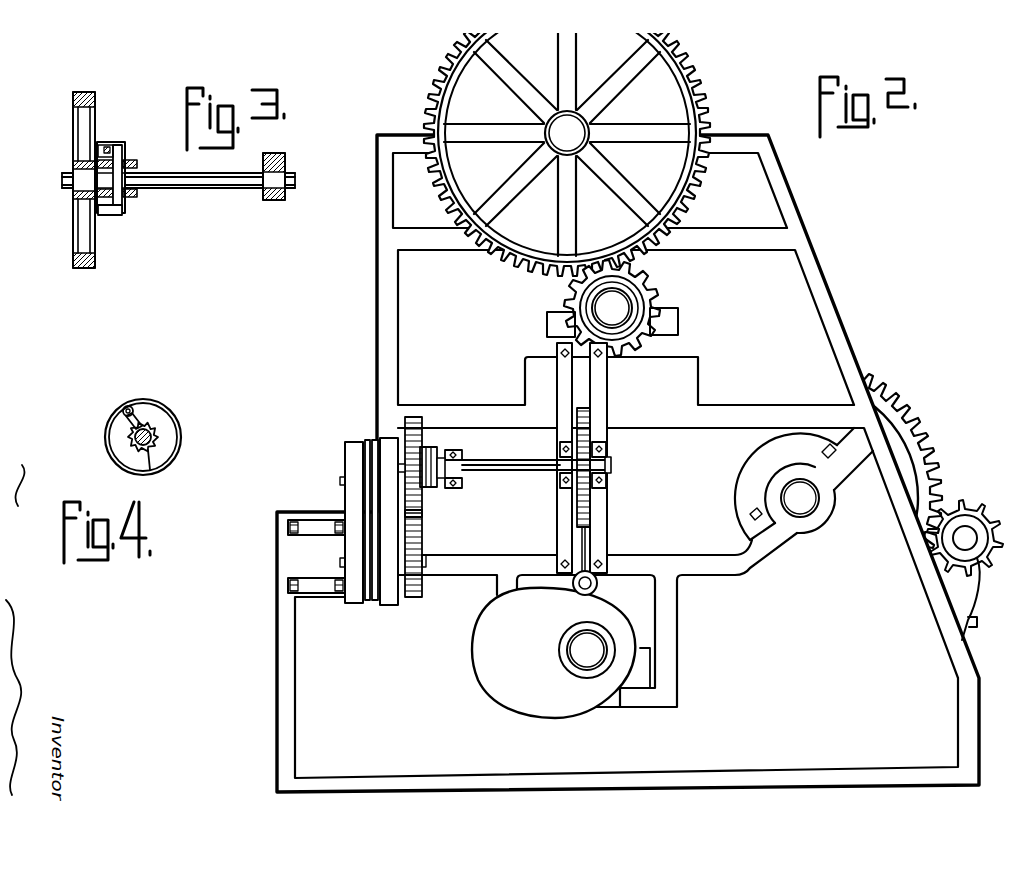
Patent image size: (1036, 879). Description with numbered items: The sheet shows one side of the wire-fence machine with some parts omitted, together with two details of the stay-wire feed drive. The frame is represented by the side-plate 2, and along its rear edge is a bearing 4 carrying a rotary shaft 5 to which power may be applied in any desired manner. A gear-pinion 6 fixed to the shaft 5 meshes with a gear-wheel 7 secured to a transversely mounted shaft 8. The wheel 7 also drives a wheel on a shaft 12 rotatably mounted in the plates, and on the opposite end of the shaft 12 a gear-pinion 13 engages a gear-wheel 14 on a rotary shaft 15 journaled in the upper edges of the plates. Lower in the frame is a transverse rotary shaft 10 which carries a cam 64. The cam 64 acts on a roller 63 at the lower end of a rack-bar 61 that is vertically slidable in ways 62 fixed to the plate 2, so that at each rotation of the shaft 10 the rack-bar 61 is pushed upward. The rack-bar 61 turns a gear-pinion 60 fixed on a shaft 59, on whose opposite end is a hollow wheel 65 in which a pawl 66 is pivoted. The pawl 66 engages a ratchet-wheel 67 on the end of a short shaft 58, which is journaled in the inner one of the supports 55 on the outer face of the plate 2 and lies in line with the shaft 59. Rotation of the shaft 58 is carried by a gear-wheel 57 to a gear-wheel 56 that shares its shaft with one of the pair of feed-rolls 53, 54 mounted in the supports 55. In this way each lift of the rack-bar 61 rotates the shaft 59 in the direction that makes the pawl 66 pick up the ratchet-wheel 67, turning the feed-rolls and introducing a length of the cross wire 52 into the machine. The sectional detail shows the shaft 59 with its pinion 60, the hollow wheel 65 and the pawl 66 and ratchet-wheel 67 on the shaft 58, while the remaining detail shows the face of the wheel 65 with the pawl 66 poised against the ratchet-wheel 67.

In FIG. 2, the side-plate 2 is at (818, 273).
In FIG. 2, the bearing 4 is at (960, 583).
In FIG. 2, the rotary shaft 5 is at (965, 538).
In FIG. 2, the gear-pinion 6 is at (965, 508).
In FIG. 2, the gear-wheel 7 is at (897, 406).
In FIG. 2, the shaft 8 is at (808, 505).
In FIG. 2, the transverse rotary shaft 10 is at (600, 645).
In FIG. 2, the shaft 12 is at (648, 283).
In FIG. 2, the gear-pinion 13 is at (630, 302).
In FIG. 2, the gear-wheel 14 is at (706, 88).
In FIG. 2, the rotary shaft 15 is at (575, 115).
In FIG. 2, the cross wire 52 is at (368, 522).
In FIG. 2, the feed-roll 53 is at (370, 603).
In FIG. 2, the feed-roll 54 is at (363, 442).
In FIG. 2, the support 55 is at (392, 543).
In FIG. 2, the gear-wheel 56 is at (420, 600).
In FIG. 2, the gear-wheel 57 is at (413, 418).
In FIG. 3, the gear-wheel 57 is at (95, 112).
In FIG. 2, the short shaft 58 is at (398, 468).
In FIG. 3, the short shaft 58 is at (62, 182).
In FIG. 4, the short shaft 58 is at (160, 437).
In FIG. 2, the shaft 59 is at (505, 478).
In FIG. 3, the shaft 59 is at (200, 186).
In FIG. 2, the gear-pinion 60 is at (606, 487).
In FIG. 3, the gear-pinion 60 is at (275, 200).
In FIG. 2, the rack-bar 61 is at (590, 512).
In FIG. 2, the ways 62 is at (597, 380).
In FIG. 2, the roller 63 is at (598, 585).
In FIG. 2, the cam 64 is at (497, 690).
In FIG. 2, the hollow wheel 65 is at (428, 446).
In FIG. 3, the hollow wheel 65 is at (115, 152).
In FIG. 4, the hollow wheel 65 is at (180, 410).
In FIG. 3, the pawl 66 is at (123, 150).
In FIG. 4, the pawl 66 is at (145, 405).
In FIG. 3, the ratchet-wheel 67 is at (108, 215).
In FIG. 4, the ratchet-wheel 67 is at (150, 455).